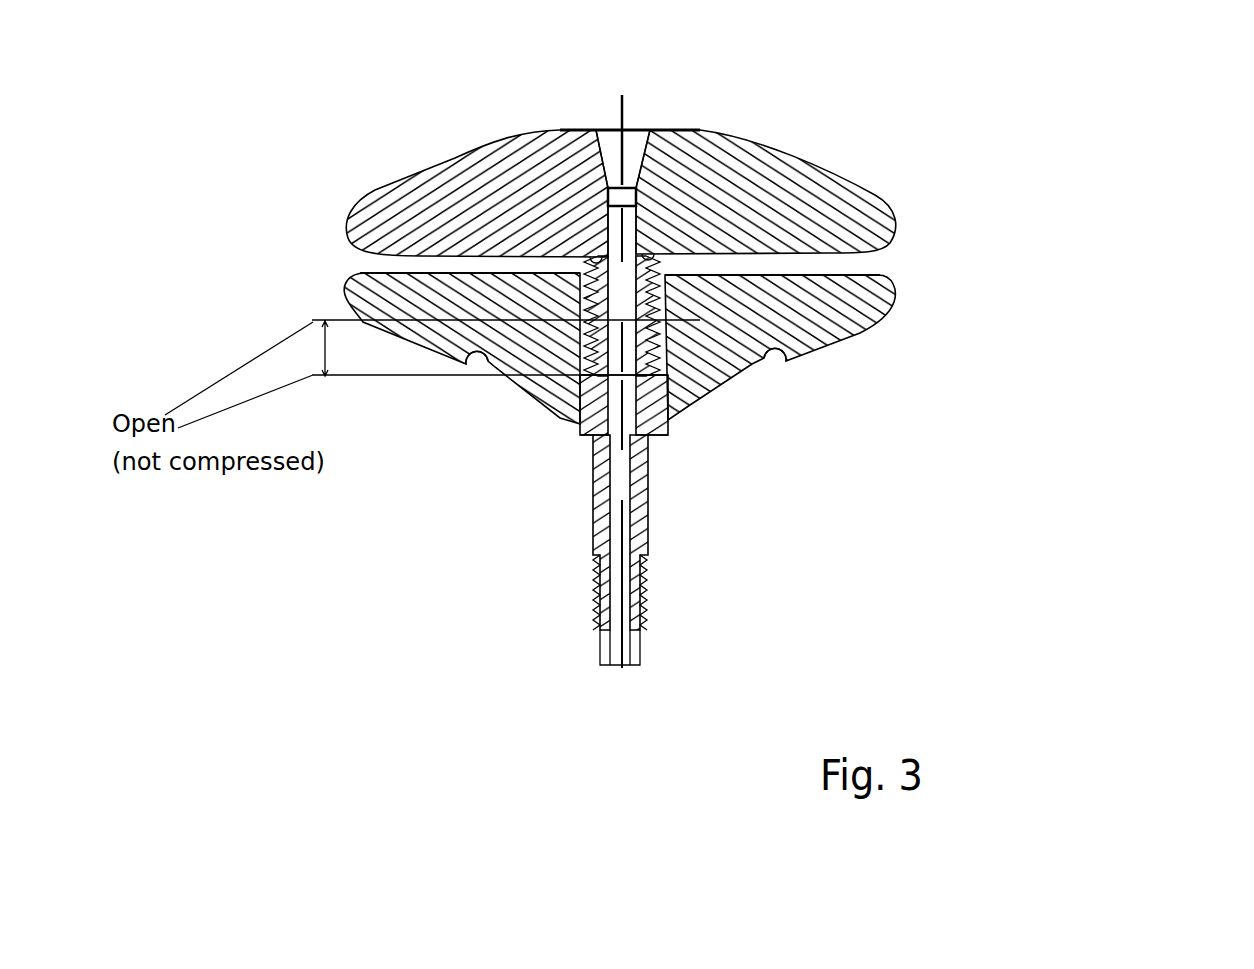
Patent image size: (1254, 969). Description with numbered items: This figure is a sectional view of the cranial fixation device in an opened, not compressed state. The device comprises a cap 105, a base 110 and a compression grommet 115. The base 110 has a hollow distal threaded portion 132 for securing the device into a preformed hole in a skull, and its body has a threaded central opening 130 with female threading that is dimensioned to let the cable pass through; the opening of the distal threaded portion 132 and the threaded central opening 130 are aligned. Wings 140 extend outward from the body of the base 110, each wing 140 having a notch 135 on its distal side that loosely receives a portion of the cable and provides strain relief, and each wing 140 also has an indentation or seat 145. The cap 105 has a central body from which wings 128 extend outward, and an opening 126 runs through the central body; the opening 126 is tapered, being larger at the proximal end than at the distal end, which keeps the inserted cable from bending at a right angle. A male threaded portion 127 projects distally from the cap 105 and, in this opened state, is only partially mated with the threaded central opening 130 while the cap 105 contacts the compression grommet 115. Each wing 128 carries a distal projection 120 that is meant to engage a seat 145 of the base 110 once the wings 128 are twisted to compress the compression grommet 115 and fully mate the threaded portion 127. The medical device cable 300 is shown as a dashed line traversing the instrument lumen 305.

The cap 105 is at (682, 215).
The base 110 is at (896, 305).
The compression grommet 115 is at (670, 385).
The distal projection 120 is at (607, 227).
The opening 126 is at (617, 163).
The threaded portion 127 is at (635, 238).
The wings 128 is at (782, 152).
The threaded central opening 130 is at (663, 284).
The distal threaded portion 132 is at (640, 598).
The notches 135 is at (764, 362).
The wings 140 is at (690, 395).
The seat 145 is at (660, 278).
The medical device cable 300 is at (687, 80).
The instrument lumen 305 is at (607, 583).